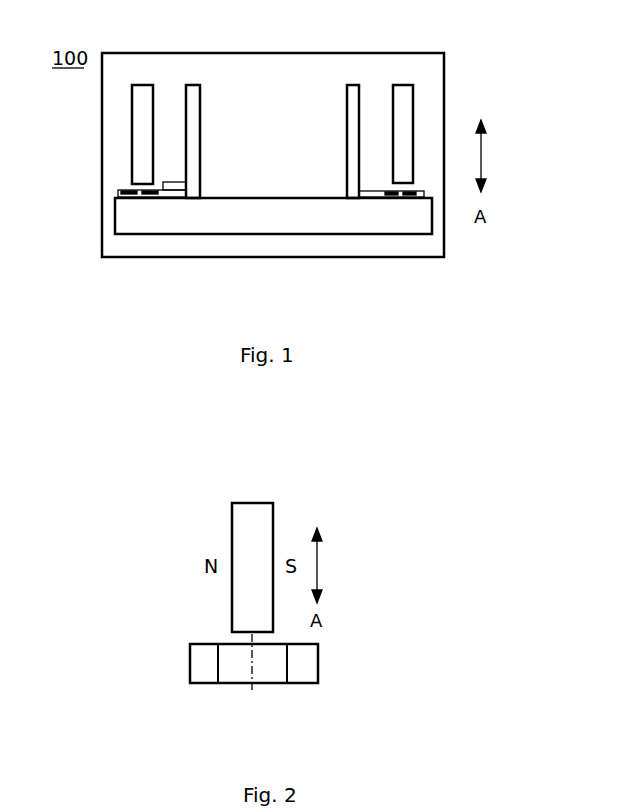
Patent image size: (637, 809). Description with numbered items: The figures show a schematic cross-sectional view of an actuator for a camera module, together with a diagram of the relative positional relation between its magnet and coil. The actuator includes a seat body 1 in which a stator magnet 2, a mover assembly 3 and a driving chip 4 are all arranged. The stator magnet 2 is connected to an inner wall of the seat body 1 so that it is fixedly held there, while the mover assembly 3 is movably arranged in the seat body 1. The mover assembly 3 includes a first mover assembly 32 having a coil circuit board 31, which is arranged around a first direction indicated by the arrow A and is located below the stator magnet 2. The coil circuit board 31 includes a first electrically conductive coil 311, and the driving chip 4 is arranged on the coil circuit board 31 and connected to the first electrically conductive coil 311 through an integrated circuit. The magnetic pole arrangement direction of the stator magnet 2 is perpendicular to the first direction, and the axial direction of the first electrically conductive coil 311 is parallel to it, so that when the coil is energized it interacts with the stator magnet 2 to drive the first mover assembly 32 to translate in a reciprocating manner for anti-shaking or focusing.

In FIG. 1, the seat body 1 is at (225, 53).
In FIG. 1, the stator magnet 2 is at (140, 98).
In FIG. 2, the stator magnet 2 is at (258, 523).
In FIG. 1, the mover assembly 3 is at (273, 200).
In FIG. 1, the coil circuit board 31 is at (117, 195).
In FIG. 2, the coil circuit board 31 is at (266, 694).
In FIG. 1, the first mover assembly 32 is at (211, 222).
In FIG. 2, the first electrically conductive coil 311 is at (300, 673).
In FIG. 1, the driving chip 4 is at (180, 182).